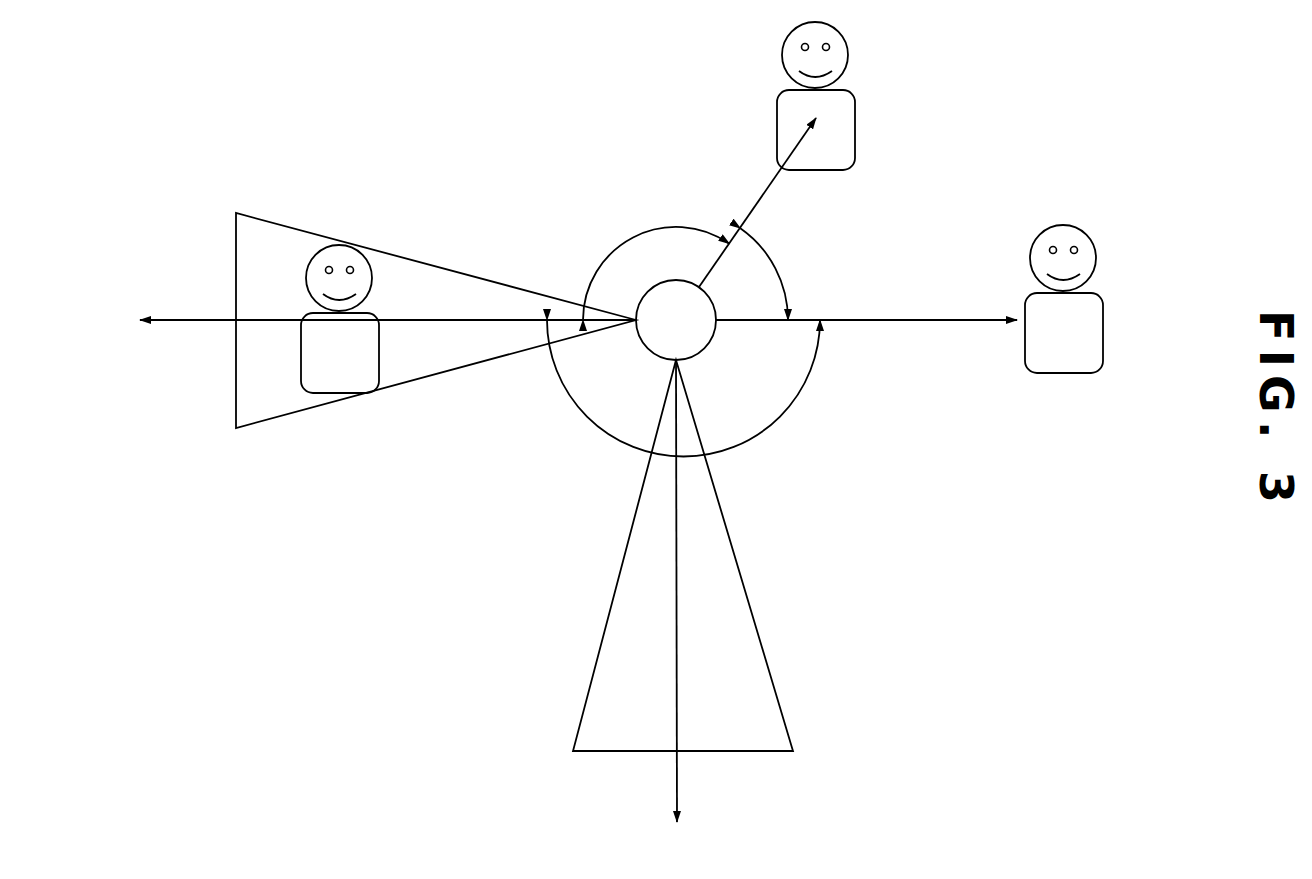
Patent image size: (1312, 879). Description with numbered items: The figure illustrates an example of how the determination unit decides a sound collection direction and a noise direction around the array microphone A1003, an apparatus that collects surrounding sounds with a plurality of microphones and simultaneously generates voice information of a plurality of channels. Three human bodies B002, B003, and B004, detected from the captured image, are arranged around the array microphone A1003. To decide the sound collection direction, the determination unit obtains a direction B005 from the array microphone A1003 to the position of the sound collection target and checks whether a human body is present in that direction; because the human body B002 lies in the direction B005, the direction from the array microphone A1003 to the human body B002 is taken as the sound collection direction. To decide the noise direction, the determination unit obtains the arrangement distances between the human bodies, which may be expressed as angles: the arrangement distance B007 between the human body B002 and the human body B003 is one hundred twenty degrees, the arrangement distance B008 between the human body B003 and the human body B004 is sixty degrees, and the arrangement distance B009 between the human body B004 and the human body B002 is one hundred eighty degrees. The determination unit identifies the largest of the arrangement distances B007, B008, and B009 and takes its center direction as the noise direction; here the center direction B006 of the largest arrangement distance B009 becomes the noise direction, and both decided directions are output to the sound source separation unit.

The array microphone A1003 is at (710, 345).
The human body B002 is at (380, 362).
The human body B003 is at (857, 127).
The human body B004 is at (1065, 372).
The direction B005 is at (183, 318).
The center direction B006 is at (680, 783).
The arrangement distance B007 is at (676, 227).
The arrangement distance B008 is at (773, 260).
The arrangement distance B009 is at (798, 380).